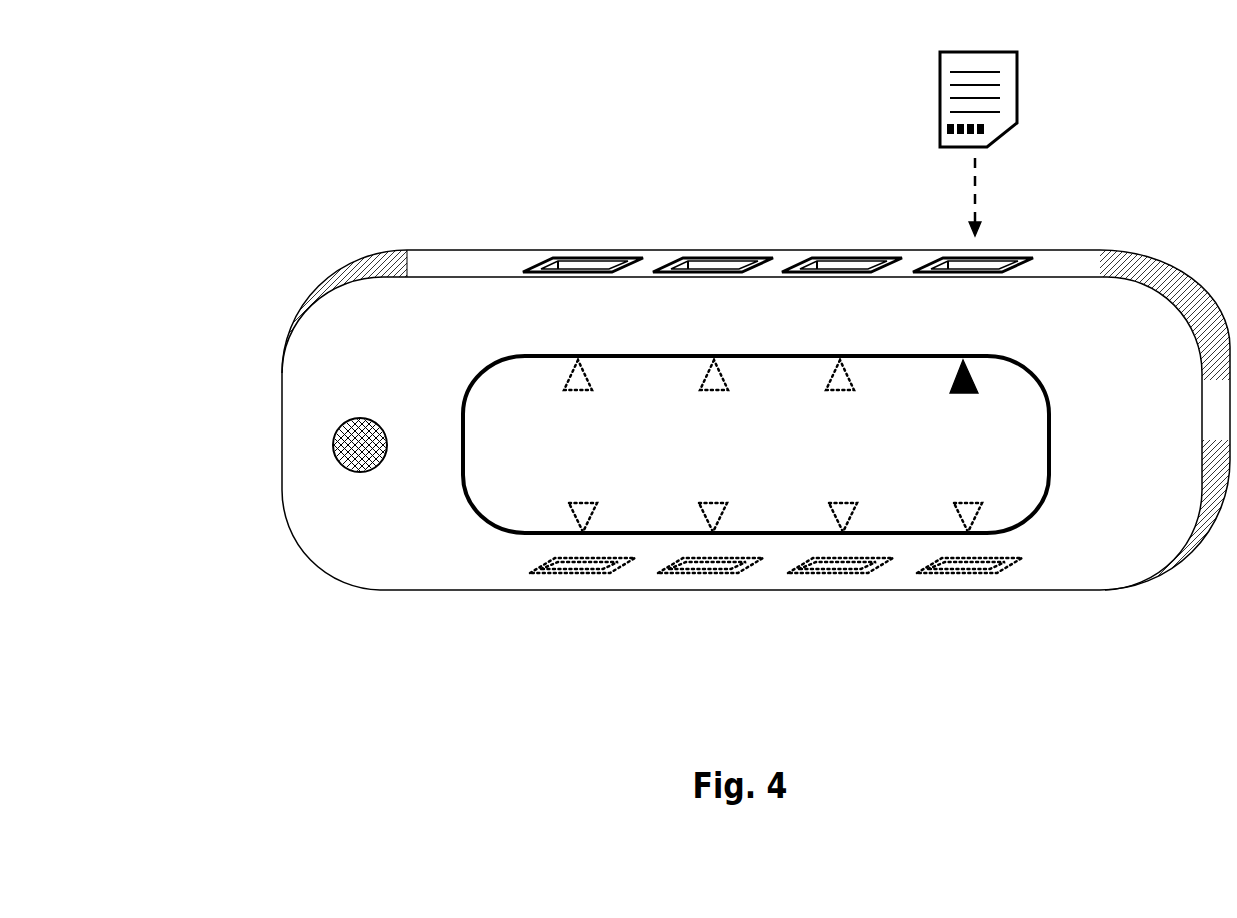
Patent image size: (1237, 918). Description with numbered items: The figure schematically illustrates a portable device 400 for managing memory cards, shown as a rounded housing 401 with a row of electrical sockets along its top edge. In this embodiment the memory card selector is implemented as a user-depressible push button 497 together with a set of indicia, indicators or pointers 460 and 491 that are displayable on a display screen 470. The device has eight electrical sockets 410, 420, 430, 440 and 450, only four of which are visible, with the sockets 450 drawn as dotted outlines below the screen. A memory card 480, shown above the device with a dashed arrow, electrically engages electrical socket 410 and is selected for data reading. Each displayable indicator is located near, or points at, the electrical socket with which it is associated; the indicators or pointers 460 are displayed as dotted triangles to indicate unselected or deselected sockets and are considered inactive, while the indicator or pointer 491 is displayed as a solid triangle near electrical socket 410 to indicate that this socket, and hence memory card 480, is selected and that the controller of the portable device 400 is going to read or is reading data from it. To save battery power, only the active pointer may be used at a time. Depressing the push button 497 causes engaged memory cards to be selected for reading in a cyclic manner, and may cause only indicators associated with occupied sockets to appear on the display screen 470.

The portable device 400 is at (398, 193).
The housing 401 is at (318, 562).
The electrical socket 410 is at (988, 266).
The electrical socket 420 is at (854, 266).
The electrical socket 430 is at (721, 266).
The electrical socket 440 is at (588, 266).
The electrical sockets 450 is at (1030, 577).
The indicators or pointers 460 is at (1000, 503).
The display screen 470 is at (478, 378).
The memory card 480 is at (937, 80).
The indicator or pointer 491 is at (975, 393).
The user-depressible push button 497 is at (352, 413).